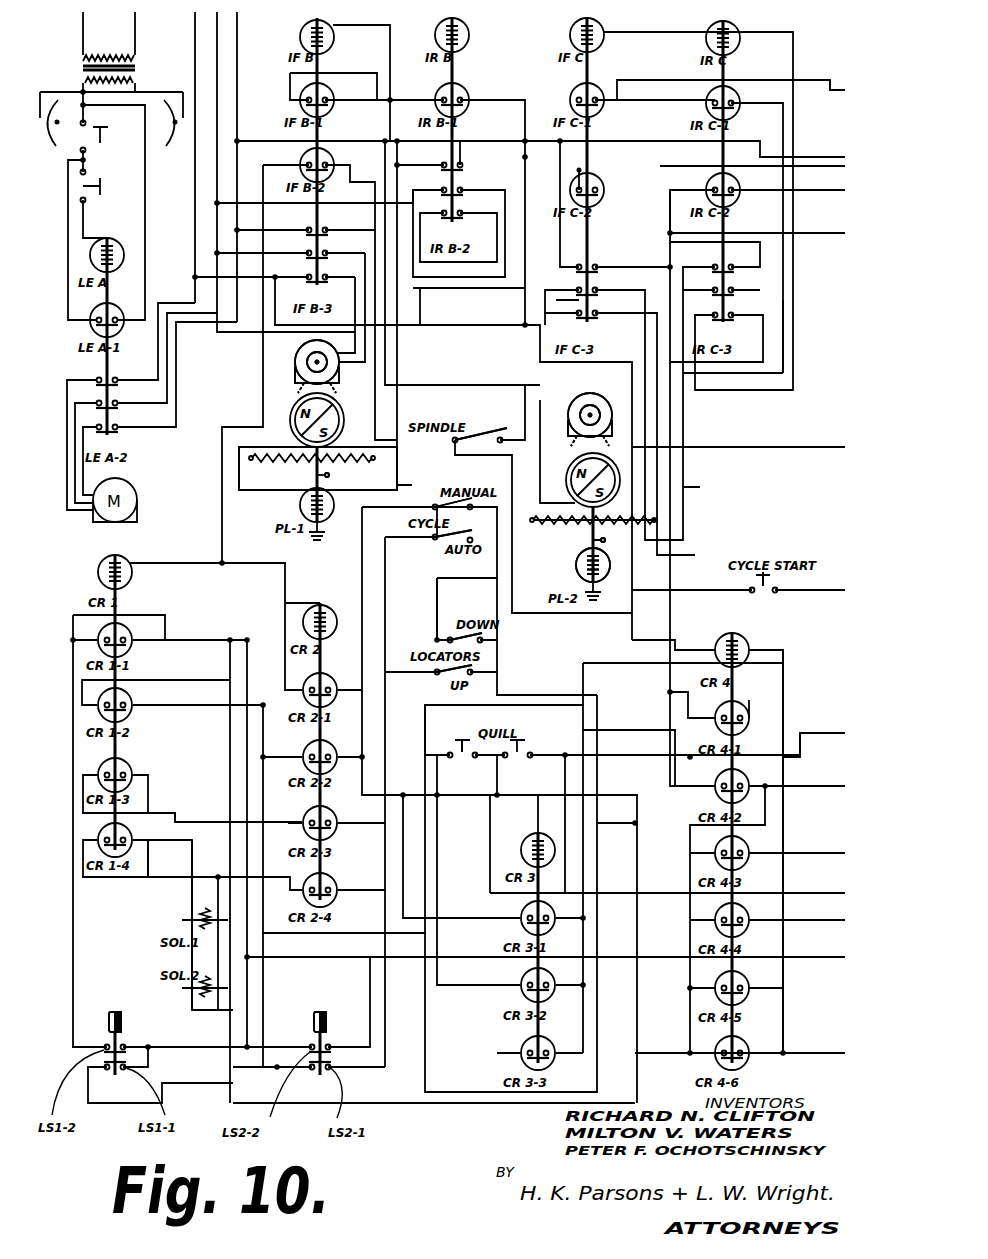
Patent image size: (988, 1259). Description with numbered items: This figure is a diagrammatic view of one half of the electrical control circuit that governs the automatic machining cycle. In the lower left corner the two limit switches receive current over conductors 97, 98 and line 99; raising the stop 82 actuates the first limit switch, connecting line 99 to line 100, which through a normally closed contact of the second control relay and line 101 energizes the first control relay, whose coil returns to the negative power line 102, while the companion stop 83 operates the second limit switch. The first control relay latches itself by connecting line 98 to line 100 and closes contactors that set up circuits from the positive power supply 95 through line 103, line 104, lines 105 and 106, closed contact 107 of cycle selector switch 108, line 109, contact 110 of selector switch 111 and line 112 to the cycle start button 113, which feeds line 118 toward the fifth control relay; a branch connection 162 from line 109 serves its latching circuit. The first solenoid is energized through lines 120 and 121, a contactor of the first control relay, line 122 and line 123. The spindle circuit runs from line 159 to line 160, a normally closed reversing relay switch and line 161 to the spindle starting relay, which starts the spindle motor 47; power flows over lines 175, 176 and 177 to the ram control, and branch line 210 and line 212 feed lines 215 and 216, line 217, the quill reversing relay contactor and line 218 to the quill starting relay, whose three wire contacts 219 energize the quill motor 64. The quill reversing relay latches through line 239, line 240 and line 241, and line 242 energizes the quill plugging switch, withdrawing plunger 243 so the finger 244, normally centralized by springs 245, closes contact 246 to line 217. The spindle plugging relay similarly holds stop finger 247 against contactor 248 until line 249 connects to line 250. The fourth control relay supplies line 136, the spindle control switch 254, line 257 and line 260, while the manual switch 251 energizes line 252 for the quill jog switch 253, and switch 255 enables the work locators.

The positive power supply 95 is at (58, 144).
The negative power supply line 102 is at (170, 146).
The line 177 is at (262, 185).
The line 176 is at (352, 182).
The line 161 is at (410, 100).
The line 160 is at (512, 93).
The line 241 is at (665, 32).
The line 240 is at (810, 80).
The line 217 is at (752, 105).
The line 218 is at (644, 136).
The line 159 is at (823, 157).
The line 212 is at (798, 168).
The line 239 is at (795, 191).
The line 175 is at (829, 234).
The line 242 is at (797, 334).
The three wire contacts 219 is at (554, 301).
The spindle motor 47 is at (298, 355).
The line 250 is at (393, 440).
The spindle control switch 254 is at (490, 432).
The quill motor 64 is at (592, 393).
The line 216 is at (645, 447).
The line 215 is at (773, 447).
The contactor 248 is at (329, 475).
The stop finger 247 is at (315, 481).
The switch 251 is at (435, 506).
The line 249 is at (262, 491).
The springs 245 is at (590, 528).
The operating finger 244 is at (588, 543).
The contact 246 is at (628, 548).
The plunger 243 is at (580, 566).
The cycle selector switch 108 is at (405, 523).
The contact 107 is at (452, 548).
The line 109 is at (437, 600).
The contact 110 is at (440, 630).
The selector switch 111 is at (415, 650).
The line 112 is at (578, 614).
The line 101 is at (172, 563).
The line 100 is at (162, 615).
The conductor 98 is at (185, 640).
The cycle start button 113 is at (758, 594).
The line 118 is at (808, 590).
The line 260 is at (788, 660).
The branch line 210 is at (806, 733).
The switch 255 is at (435, 672).
The line 252 is at (425, 728).
The manual control switch 253 is at (462, 760).
The line 120 is at (798, 786).
The line 105 is at (200, 822).
The line 106 is at (393, 795).
The line 121 is at (640, 823).
The line 136 is at (799, 853).
The branch connection 162 is at (416, 805).
The line 123 is at (218, 858).
The line 257 is at (797, 920).
The conductor 97 is at (803, 957).
The line 122 is at (192, 890).
The line 104 is at (148, 922).
The stop 82 is at (110, 1015).
The limit switch roller 83 is at (327, 1018).
The line 99 is at (178, 1047).
The line 103 is at (195, 1078).